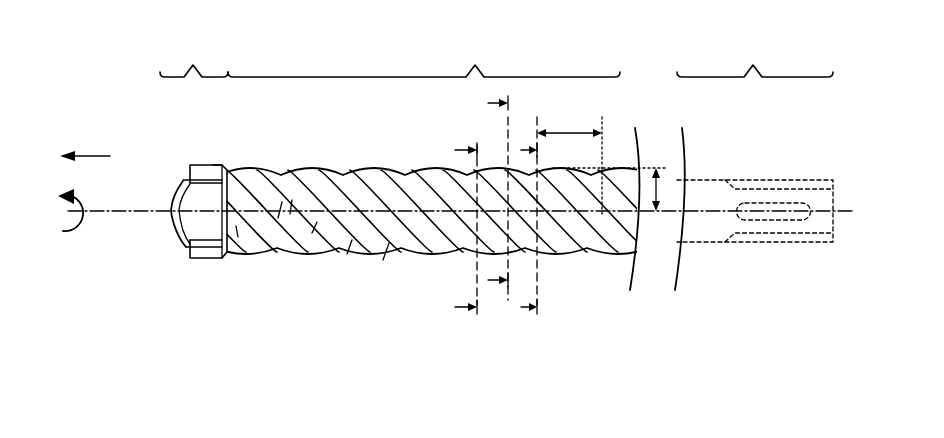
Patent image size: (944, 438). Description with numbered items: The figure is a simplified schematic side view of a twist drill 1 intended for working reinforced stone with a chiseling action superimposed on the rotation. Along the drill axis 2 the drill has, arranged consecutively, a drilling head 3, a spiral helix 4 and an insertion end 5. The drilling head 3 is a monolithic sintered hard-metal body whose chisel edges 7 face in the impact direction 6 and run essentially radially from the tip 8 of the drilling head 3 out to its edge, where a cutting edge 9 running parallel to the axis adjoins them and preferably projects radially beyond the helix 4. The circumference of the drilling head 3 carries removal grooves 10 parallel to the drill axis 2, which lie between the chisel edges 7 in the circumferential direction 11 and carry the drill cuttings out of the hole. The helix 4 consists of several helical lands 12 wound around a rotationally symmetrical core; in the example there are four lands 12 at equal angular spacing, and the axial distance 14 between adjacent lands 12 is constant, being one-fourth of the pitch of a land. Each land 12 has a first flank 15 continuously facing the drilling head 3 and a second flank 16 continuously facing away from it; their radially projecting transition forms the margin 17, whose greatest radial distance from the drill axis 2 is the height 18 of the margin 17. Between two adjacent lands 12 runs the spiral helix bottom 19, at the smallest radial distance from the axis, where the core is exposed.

The twist drill 1 is at (116, 46).
The drill axis 2 is at (92, 214).
The drilling head 3 is at (194, 55).
The spiral helix 4 is at (416, 144).
The insertion end 5 is at (755, 137).
The impact direction 6 is at (90, 156).
The chisel edges 7 is at (183, 225).
The tip 8 is at (170, 213).
The cutting edge 9 is at (214, 165).
The removal grooves 10 is at (205, 222).
The circumferential direction 11 is at (64, 230).
The helical lands 12 is at (278, 218).
The axial distance 14 is at (566, 133).
The first flank 15 is at (320, 222).
The second flank 16 is at (385, 238).
The margin 17 is at (353, 235).
The height of the margin 18 is at (657, 170).
The helix bottom 19 is at (292, 200).